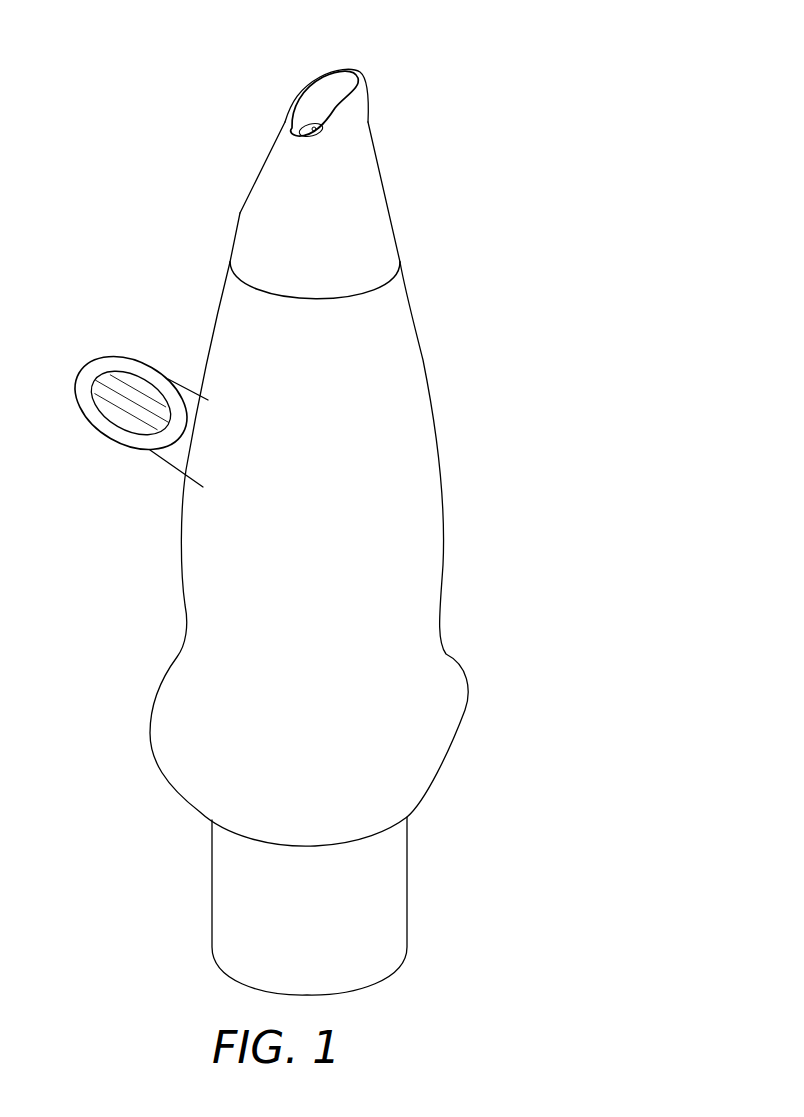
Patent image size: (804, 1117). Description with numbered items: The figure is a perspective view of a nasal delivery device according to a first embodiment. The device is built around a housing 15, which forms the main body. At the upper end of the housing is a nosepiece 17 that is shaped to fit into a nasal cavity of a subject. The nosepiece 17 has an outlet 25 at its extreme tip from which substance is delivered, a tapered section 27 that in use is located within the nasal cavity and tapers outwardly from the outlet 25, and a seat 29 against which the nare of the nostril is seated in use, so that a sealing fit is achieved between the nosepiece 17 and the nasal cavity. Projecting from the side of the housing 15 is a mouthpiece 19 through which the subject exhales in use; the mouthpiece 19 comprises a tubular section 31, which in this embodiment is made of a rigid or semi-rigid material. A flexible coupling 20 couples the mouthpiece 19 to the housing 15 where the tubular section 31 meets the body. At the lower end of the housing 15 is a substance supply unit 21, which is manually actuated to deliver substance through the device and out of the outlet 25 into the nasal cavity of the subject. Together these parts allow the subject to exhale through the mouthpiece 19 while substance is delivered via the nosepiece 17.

The housing 15 is at (454, 457).
The nosepiece 17 is at (384, 117).
The mouthpiece 19 is at (83, 443).
The flexible coupling 20 is at (192, 504).
The substance supply unit 21 is at (429, 887).
The outlet 25 is at (338, 66).
The tapered section 27 is at (263, 173).
The seat 29 is at (375, 193).
The tubular section 31 is at (181, 383).